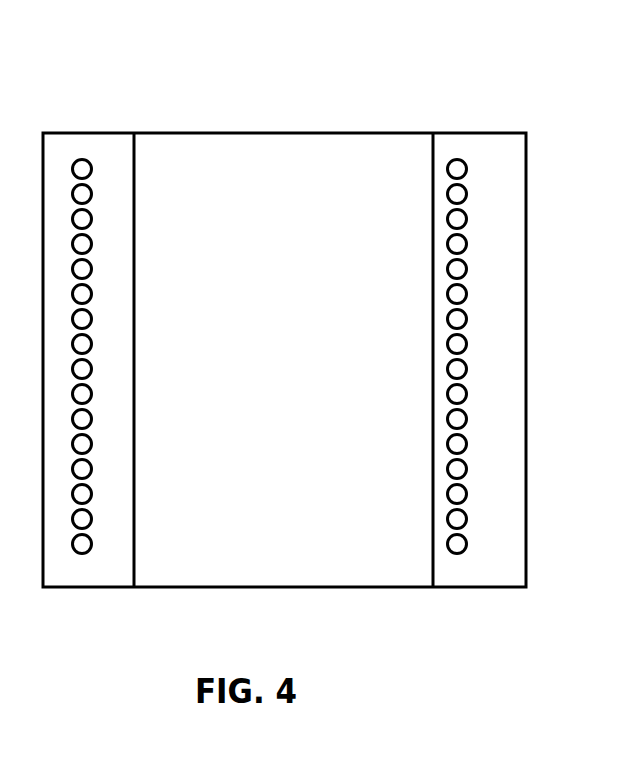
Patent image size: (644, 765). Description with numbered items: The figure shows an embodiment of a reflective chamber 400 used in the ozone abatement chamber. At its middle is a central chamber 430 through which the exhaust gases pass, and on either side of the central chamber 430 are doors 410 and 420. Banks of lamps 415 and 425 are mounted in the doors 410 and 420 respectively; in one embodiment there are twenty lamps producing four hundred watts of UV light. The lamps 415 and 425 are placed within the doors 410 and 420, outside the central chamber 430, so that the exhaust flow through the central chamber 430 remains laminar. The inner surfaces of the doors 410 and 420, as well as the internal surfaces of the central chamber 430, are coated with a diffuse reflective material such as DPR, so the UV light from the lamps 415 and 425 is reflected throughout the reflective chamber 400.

The reflective chamber 400 is at (325, 58).
The door 410 is at (537, 301).
The bank of lamps 415 is at (464, 156).
The door 420 is at (116, 129).
The bank of lamps 425 is at (99, 290).
The central chamber 430 is at (301, 358).